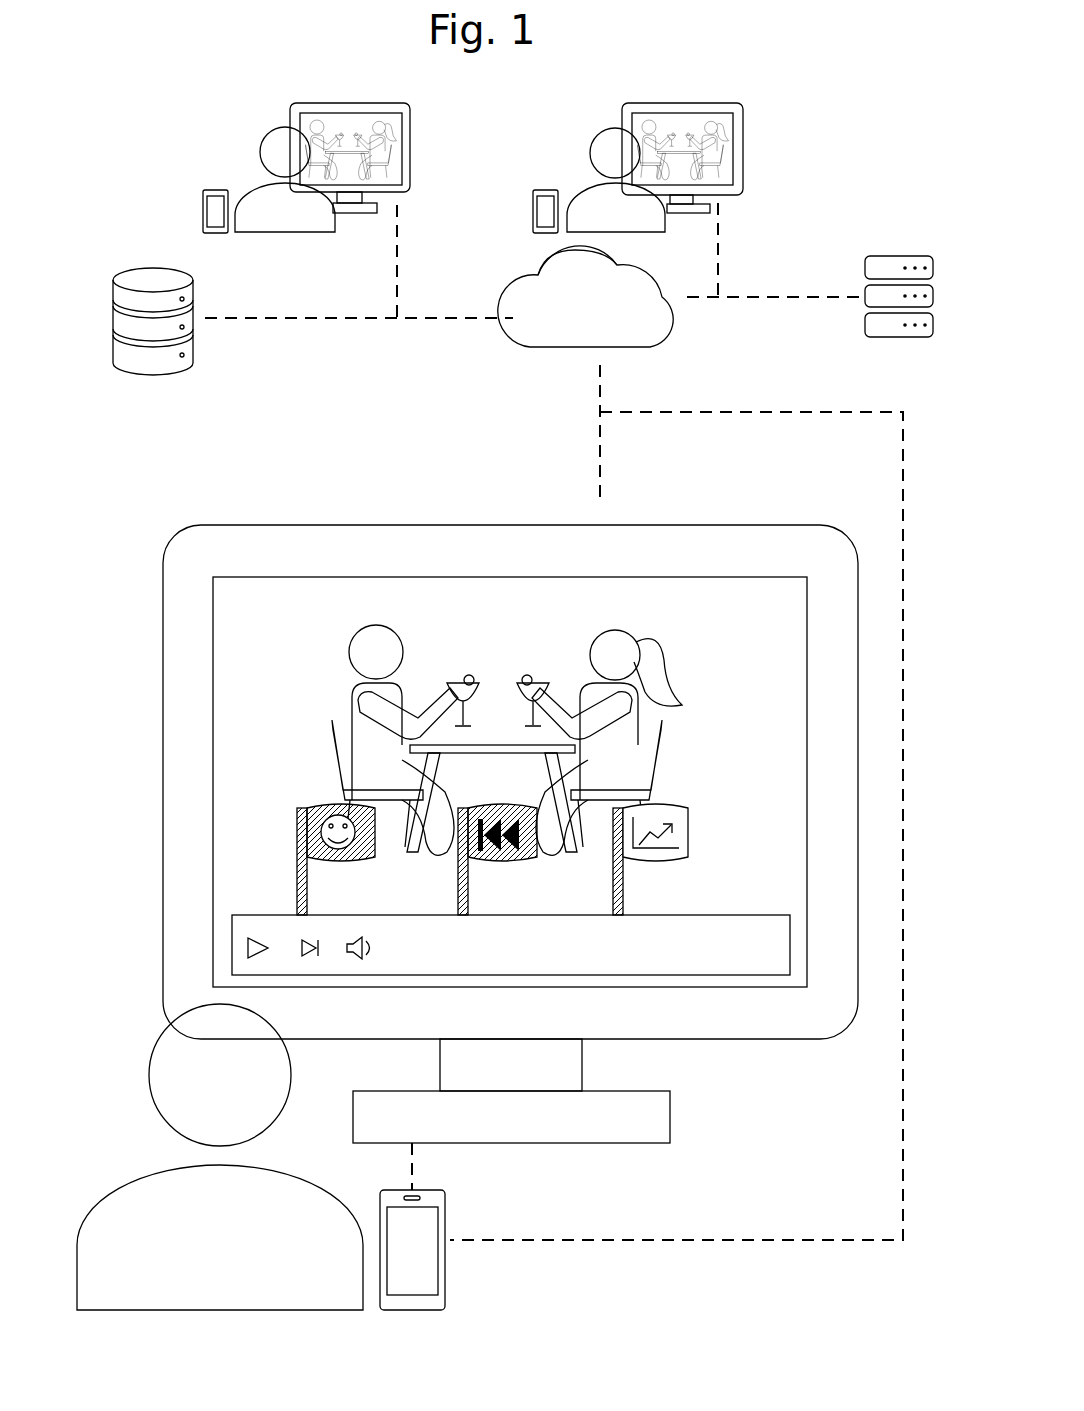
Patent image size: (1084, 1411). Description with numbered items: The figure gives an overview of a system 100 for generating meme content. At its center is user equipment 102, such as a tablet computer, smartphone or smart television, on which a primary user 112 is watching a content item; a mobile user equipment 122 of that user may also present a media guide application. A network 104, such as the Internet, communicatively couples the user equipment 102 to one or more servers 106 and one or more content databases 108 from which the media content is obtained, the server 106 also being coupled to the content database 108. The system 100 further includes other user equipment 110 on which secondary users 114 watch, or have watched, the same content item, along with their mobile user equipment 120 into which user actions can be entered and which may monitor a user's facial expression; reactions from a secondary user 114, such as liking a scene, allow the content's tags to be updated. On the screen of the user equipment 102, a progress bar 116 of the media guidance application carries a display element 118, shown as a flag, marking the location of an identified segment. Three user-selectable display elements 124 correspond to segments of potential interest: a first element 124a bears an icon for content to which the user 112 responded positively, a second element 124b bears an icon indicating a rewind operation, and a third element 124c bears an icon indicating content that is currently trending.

The system 100 is at (150, 105).
The user equipment 102 is at (245, 525).
The network 104 is at (525, 288).
The server 106 is at (903, 248).
The content database 108 is at (145, 382).
The other user equipment 110 is at (306, 103).
The user 112 is at (120, 1190).
The secondary user 114 is at (300, 233).
The progress bar 116 is at (232, 948).
The display element 118 is at (318, 806).
The mobile user equipment 120 is at (203, 205).
The mobile user equipment 122 is at (447, 1203).
The user-selectable display element 124 is at (545, 703).
The user-selectable display element 124a is at (370, 703).
The user-selectable display element 124b is at (533, 858).
The user-selectable display element 124c is at (690, 815).